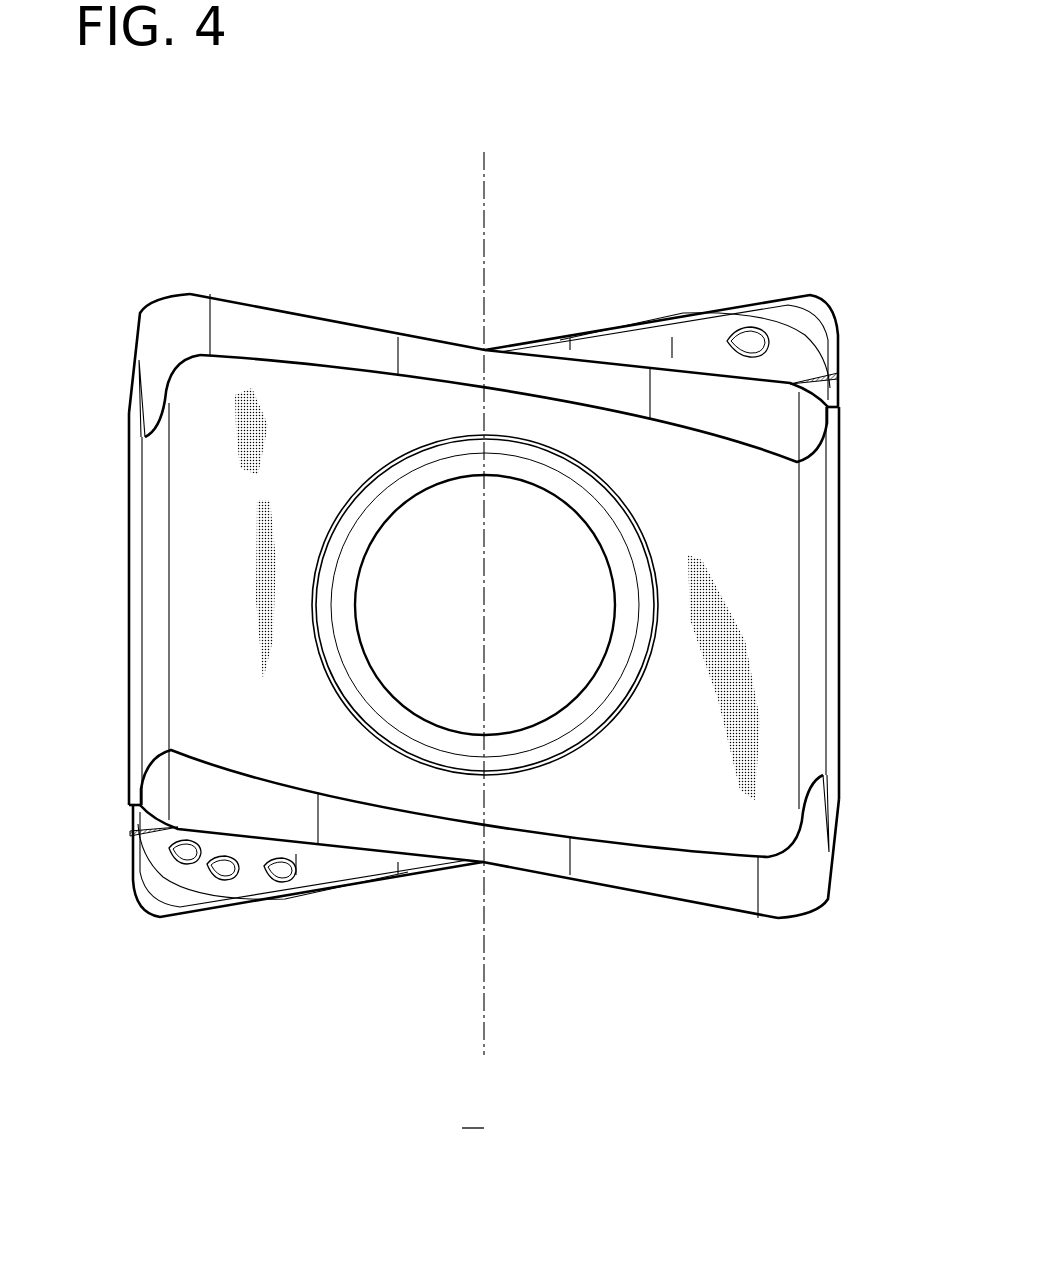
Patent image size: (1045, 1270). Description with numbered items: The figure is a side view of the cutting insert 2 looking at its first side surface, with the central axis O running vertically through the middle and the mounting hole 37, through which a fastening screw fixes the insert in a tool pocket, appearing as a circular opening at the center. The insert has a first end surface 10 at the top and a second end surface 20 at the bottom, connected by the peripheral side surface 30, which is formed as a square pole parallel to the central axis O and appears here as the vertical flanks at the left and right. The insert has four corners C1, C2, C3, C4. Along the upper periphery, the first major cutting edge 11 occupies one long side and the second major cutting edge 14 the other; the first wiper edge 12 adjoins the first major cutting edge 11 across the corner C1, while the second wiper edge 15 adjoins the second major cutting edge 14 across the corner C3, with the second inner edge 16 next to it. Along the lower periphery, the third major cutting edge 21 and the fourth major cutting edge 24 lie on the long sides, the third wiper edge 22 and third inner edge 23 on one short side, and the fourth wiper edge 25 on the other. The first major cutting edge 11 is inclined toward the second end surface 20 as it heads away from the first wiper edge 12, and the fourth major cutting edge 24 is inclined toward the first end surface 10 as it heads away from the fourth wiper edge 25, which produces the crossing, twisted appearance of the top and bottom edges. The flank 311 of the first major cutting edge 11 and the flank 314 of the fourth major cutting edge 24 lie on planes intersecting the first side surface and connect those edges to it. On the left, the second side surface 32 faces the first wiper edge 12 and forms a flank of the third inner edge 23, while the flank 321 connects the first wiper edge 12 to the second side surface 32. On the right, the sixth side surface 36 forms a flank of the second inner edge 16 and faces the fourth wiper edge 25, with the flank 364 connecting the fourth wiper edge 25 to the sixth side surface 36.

The cutting insert 2 is at (473, 1113).
The central axis O is at (484, 584).
The first end surface 10 is at (695, 350).
The first major cutting edge 11 is at (435, 337).
The first wiper edge 12 is at (137, 343).
The second major cutting edge 14 is at (598, 323).
The second wiper edge 15 is at (835, 340).
The second inner edge 16 is at (840, 395).
The second end surface 20 is at (273, 850).
The third major cutting edge 21 is at (356, 888).
The third wiper edge 22 is at (133, 863).
The third inner edge 23 is at (130, 817).
The fourth major cutting edge 24 is at (522, 872).
The fourth wiper edge 25 is at (833, 873).
The peripheral side surface 30 is at (842, 548).
The second side surface 32 is at (133, 495).
The sixth side surface 36 is at (835, 593).
The mounting hole 37 is at (443, 727).
The flank of the first major cutting edge 311 is at (288, 333).
The flank of the fourth major cutting edge 314 is at (643, 873).
The flank of the first wiper edge 321 is at (130, 380).
The flank of the fourth wiper edge 364 is at (840, 848).
The corner C1 is at (157, 613).
The corner C2 is at (155, 913).
The corner C3 is at (808, 292).
The corner C4 is at (815, 688).